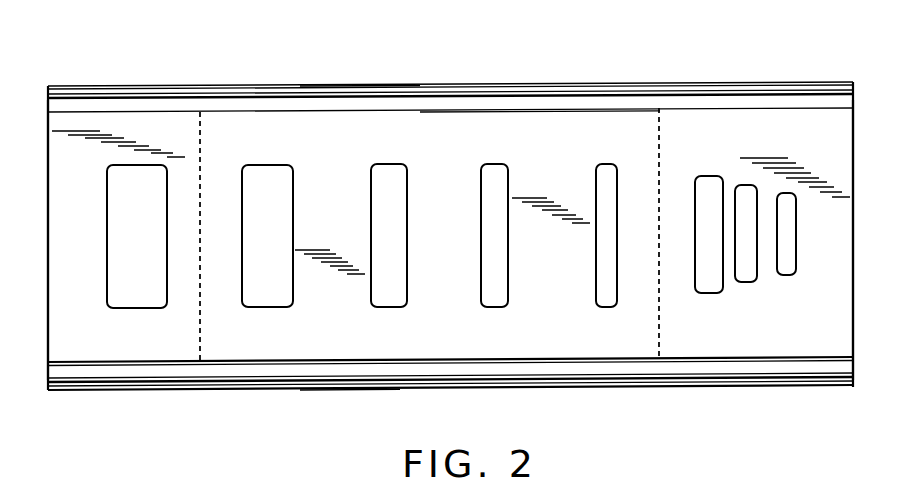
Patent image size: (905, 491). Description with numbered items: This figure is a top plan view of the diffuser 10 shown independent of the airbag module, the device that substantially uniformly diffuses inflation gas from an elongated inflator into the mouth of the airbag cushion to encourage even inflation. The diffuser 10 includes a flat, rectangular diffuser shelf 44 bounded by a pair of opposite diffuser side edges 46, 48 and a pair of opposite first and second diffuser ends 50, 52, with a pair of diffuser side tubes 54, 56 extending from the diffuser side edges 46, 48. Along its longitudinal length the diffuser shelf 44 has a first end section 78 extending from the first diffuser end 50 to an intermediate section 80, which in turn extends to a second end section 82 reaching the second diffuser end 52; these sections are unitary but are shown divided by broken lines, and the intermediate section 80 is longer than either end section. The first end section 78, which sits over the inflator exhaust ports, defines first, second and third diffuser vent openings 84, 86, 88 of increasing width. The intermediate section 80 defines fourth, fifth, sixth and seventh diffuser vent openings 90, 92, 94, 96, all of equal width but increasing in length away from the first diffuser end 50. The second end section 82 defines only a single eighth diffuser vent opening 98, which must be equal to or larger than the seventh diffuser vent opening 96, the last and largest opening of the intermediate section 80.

The diffuser 10 is at (404, 54).
The diffuser shelf 44 is at (585, 120).
The diffuser side edge 46 is at (312, 356).
The diffuser side edge 48 is at (262, 118).
The first diffuser end 50 is at (853, 100).
The second diffuser end 52 is at (48, 106).
The diffuser side tube 54 is at (342, 383).
The diffuser side tube 56 is at (306, 87).
The first end section 78 is at (745, 115).
The intermediate section 80 is at (527, 118).
The second end section 82 is at (112, 123).
The first diffuser vent opening 84 is at (783, 277).
The second diffuser vent opening 86 is at (740, 283).
The third diffuser vent opening 88 is at (708, 295).
The fourth diffuser vent opening 90 is at (606, 309).
The fifth diffuser vent opening 92 is at (493, 309).
The sixth diffuser vent opening 94 is at (385, 309).
The seventh diffuser vent opening 96 is at (262, 309).
The eighth diffuser vent opening 98 is at (149, 309).